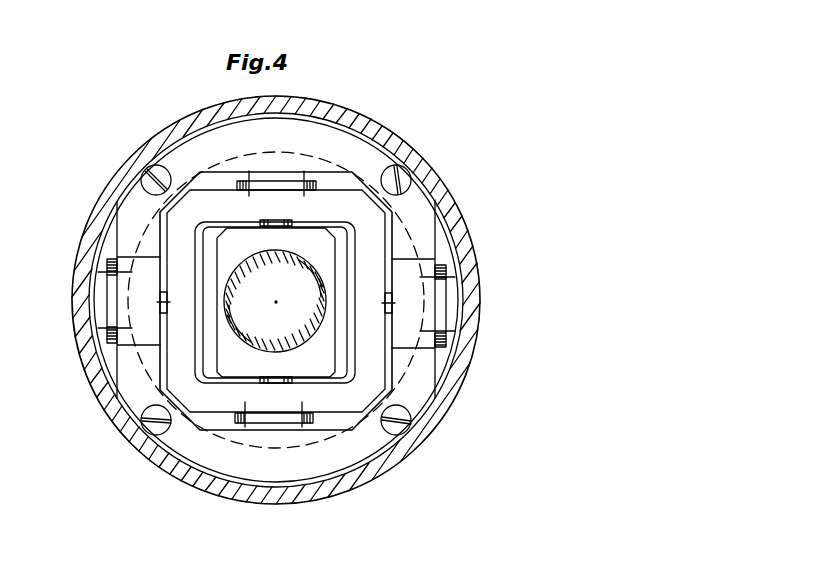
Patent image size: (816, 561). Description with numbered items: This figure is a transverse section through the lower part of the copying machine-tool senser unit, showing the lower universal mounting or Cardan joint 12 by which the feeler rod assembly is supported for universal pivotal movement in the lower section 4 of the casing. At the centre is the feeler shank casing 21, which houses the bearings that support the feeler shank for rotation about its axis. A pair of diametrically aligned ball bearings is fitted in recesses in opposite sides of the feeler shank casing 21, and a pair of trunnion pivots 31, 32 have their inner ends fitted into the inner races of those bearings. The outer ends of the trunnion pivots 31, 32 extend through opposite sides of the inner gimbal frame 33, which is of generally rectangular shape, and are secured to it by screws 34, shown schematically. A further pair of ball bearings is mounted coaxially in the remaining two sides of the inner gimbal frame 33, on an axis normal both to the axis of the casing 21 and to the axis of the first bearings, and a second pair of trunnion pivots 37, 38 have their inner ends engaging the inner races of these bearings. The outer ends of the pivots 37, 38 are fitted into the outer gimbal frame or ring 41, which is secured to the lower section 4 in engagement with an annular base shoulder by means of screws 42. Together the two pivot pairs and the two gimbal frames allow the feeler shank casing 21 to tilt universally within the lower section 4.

The lower section 4 is at (455, 381).
The lower universal mounting or Cardan joint 12 is at (341, 186).
The feeler shank casing 21 is at (327, 253).
The trunnion pivot 31 is at (288, 186).
The trunnion pivot 32 is at (288, 424).
The inner gimbal frame 33 is at (177, 363).
The screws 34 is at (100, 266).
The trunnion pivot 37 is at (112, 298).
The trunnion pivot 38 is at (447, 297).
The outer gimbal frame or ring 41 is at (215, 458).
The screws 42 is at (158, 170).